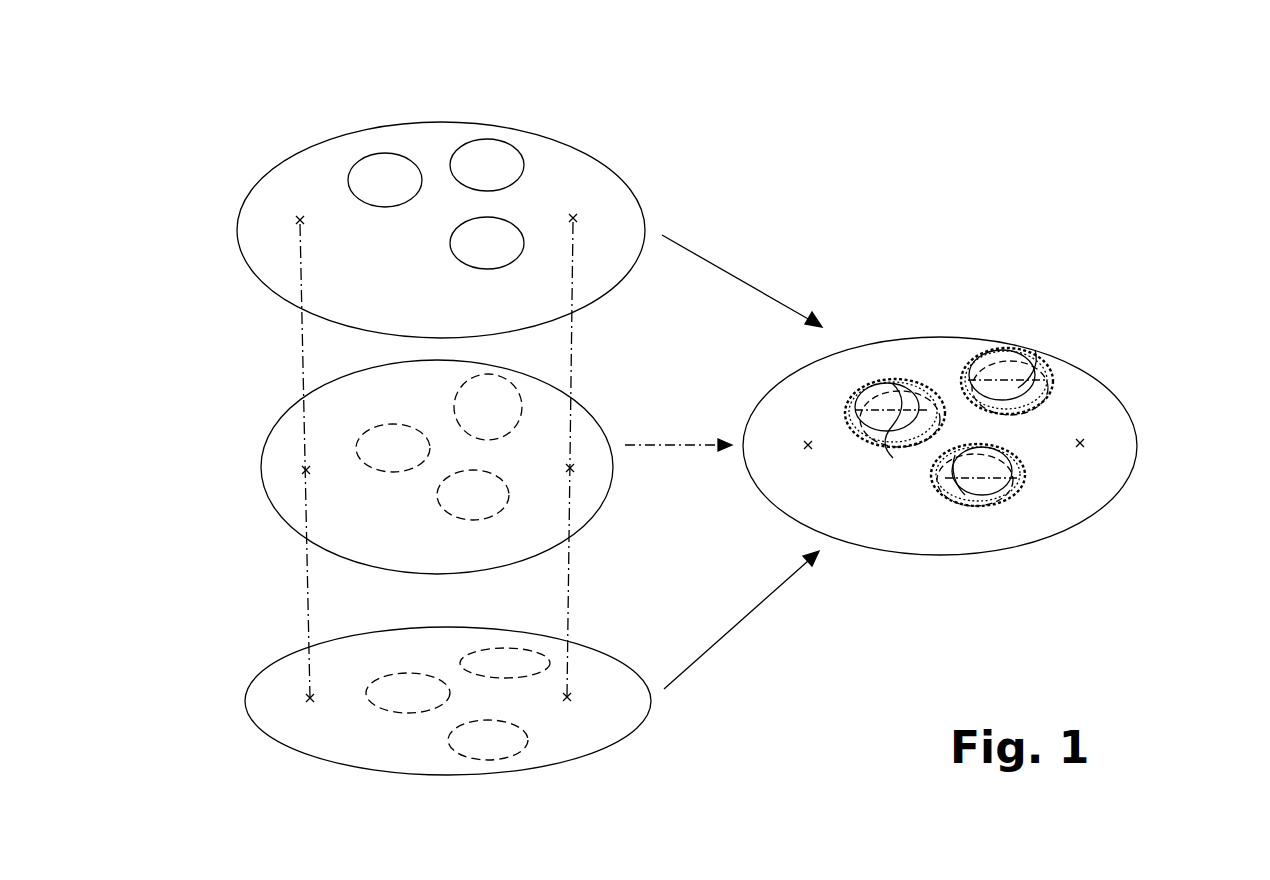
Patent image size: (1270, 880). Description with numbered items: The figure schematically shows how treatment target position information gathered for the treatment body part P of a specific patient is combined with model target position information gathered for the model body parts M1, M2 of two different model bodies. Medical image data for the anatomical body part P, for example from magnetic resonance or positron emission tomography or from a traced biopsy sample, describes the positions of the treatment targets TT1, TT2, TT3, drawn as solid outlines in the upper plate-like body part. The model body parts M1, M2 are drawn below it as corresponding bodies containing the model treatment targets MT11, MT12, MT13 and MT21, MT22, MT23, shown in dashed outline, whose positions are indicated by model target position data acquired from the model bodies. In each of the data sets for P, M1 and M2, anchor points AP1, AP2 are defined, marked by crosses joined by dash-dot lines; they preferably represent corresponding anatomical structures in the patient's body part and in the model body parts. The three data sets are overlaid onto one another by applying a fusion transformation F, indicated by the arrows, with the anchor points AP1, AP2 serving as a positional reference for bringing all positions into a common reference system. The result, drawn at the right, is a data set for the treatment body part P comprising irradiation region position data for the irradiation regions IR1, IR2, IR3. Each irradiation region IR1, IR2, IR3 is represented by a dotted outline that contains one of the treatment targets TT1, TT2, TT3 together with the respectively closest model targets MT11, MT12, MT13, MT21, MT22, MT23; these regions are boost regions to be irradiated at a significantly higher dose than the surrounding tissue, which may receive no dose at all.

The treatment body part P is at (313, 147).
The anchor point AP1 is at (297, 217).
The anchor point AP2 is at (575, 216).
The treatment target TT1 is at (381, 153).
The treatment target TT2 is at (500, 138).
The treatment target TT3 is at (457, 261).
The model body part M1 is at (277, 427).
The model body part M2 is at (258, 670).
The model treatment target MT11 is at (385, 473).
The model treatment target MT12 is at (520, 393).
The model treatment target MT13 is at (510, 487).
The model treatment target MT21 is at (407, 715).
The model treatment target MT22 is at (500, 650).
The model treatment target MT23 is at (528, 738).
The irradiation region IR1 is at (923, 383).
The irradiation region IR2 is at (1048, 381).
The irradiation region IR3 is at (937, 483).
The fusion transformation F is at (723, 462).